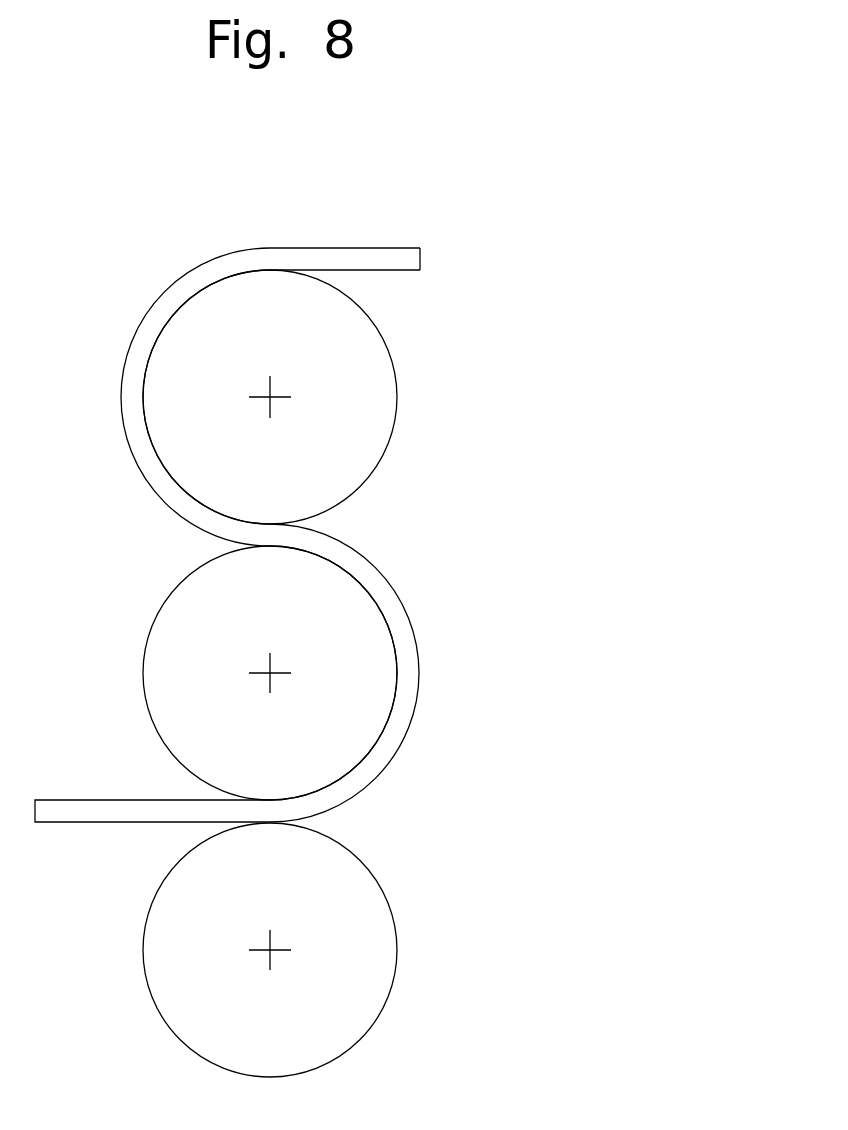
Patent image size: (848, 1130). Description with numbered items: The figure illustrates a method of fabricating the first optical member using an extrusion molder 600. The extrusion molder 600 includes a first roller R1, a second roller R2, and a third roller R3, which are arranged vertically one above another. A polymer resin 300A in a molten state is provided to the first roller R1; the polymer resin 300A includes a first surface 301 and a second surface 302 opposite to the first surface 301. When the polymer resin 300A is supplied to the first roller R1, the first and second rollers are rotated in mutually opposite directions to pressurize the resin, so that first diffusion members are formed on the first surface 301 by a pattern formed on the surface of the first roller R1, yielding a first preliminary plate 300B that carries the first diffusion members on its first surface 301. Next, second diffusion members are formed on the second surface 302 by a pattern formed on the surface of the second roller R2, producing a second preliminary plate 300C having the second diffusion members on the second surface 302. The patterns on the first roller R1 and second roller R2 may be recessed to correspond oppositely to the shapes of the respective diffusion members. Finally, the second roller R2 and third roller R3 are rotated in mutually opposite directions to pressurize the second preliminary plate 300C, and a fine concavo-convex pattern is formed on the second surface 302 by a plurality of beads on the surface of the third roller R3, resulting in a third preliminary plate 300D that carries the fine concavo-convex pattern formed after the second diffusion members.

The extrusion molder 600 is at (473, 177).
The first roller R1 is at (390, 396).
The second roller R2 is at (151, 670).
The third roller R3 is at (388, 950).
The polymer resin 300A is at (392, 245).
The first preliminary plate 300B is at (125, 393).
The second preliminary plate 300C is at (405, 672).
The third preliminary plate 300D is at (68, 814).
The first surface 301 is at (383, 272).
The second surface 302 is at (300, 245).